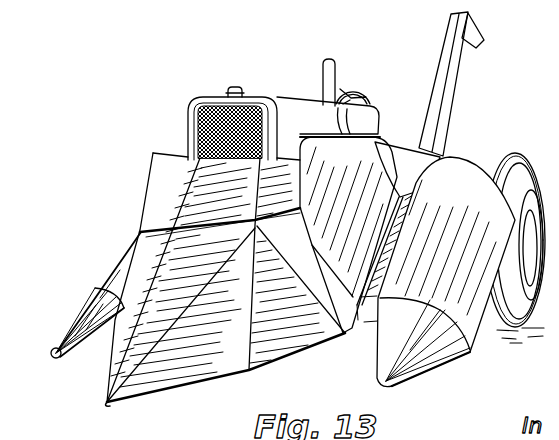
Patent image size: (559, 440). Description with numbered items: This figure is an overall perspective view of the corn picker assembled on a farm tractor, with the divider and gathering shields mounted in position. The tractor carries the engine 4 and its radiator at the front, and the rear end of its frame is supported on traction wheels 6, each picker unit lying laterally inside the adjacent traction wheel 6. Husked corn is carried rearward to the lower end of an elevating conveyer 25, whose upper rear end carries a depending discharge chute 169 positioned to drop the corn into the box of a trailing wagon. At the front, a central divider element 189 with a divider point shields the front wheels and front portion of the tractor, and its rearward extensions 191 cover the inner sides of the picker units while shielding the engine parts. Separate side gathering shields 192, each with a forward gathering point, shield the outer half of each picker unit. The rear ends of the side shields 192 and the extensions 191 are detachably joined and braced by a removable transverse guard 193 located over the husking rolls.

The engine 4 is at (299, 106).
The traction wheels 6 is at (538, 193).
The elevating conveyer 25 is at (457, 88).
The discharge chute 169 is at (482, 42).
The central divider element 189 is at (184, 378).
The rearward extensions 191 is at (337, 199).
The side gathering shields 192 is at (115, 275).
The transverse guard 193 is at (401, 148).